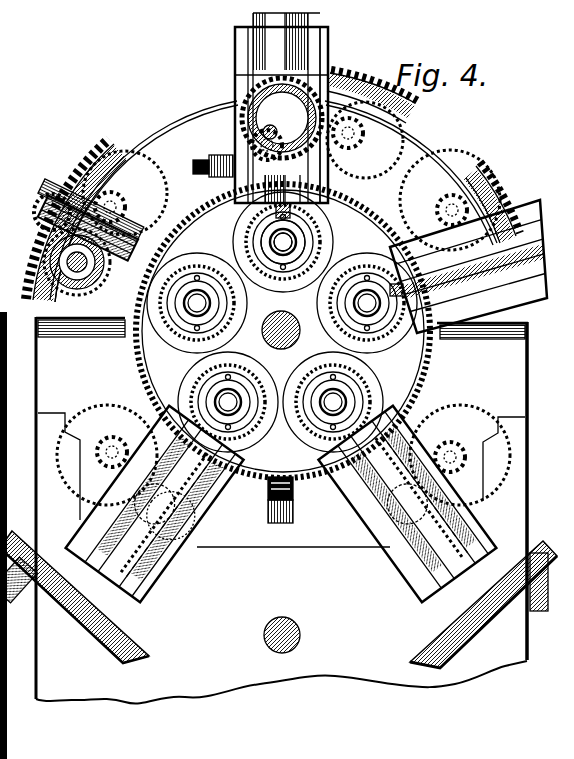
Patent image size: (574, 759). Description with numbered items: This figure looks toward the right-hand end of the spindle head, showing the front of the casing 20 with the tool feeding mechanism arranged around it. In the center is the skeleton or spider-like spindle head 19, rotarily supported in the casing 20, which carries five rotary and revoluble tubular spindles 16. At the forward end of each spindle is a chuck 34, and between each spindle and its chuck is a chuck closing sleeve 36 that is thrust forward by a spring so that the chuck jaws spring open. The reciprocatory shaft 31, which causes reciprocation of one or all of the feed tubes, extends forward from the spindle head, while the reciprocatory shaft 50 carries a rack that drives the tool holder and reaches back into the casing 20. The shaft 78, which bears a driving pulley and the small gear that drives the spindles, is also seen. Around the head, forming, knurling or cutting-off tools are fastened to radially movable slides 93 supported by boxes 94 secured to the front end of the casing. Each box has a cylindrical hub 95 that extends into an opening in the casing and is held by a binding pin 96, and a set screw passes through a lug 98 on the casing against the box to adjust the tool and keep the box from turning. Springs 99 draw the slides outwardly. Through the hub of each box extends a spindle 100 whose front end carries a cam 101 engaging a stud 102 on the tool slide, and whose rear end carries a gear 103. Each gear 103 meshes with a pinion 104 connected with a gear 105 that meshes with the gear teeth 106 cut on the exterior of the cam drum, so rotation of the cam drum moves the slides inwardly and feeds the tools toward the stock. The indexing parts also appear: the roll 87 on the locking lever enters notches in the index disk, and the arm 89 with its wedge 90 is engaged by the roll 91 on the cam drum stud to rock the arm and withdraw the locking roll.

The tubular spindle 16 is at (254, 232).
The spindle head 19 is at (283, 331).
The casing 20 is at (160, 137).
The reciprocatory shaft 31 is at (300, 334).
The chuck 34 is at (302, 237).
The chuck closing sleeve 36 is at (274, 243).
The reciprocatory shaft 50 is at (293, 513).
The shaft 78 is at (300, 624).
The roll 87 is at (18, 388).
The arm 89 is at (35, 474).
The wedge 90 is at (38, 324).
The roll 91 is at (201, 160).
The tool slide 93 is at (302, 18).
The box 94 is at (233, 32).
The cylindrical hub 95 is at (37, 237).
The binding pin 96 is at (55, 198).
The lug 98 is at (223, 155).
The spring 99 is at (150, 524).
The spindle 100 is at (77, 300).
The cam 101 is at (234, 75).
The stud 102 is at (234, 107).
The gear 103 is at (37, 283).
The pinion 104 is at (108, 158).
The gear 105 is at (107, 152).
The gear teeth 106 is at (440, 388).